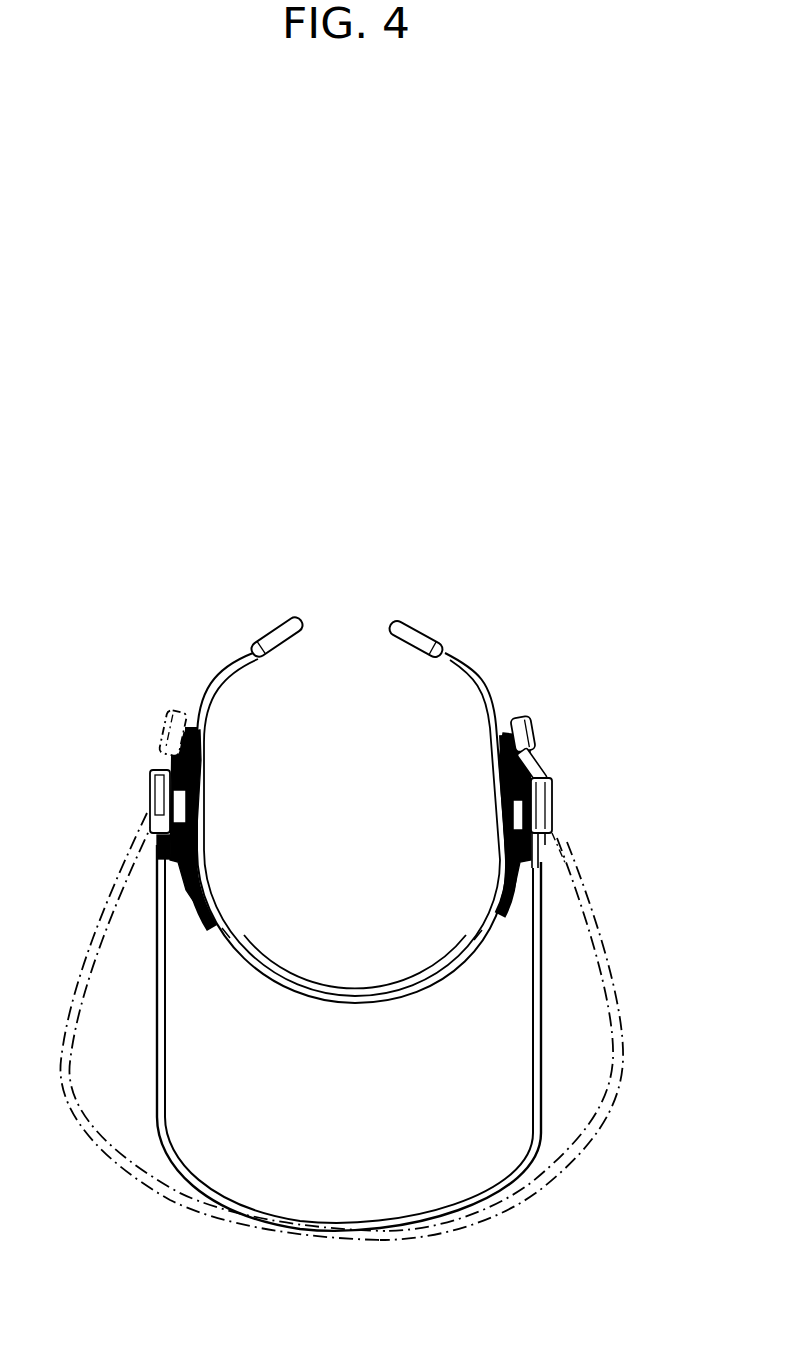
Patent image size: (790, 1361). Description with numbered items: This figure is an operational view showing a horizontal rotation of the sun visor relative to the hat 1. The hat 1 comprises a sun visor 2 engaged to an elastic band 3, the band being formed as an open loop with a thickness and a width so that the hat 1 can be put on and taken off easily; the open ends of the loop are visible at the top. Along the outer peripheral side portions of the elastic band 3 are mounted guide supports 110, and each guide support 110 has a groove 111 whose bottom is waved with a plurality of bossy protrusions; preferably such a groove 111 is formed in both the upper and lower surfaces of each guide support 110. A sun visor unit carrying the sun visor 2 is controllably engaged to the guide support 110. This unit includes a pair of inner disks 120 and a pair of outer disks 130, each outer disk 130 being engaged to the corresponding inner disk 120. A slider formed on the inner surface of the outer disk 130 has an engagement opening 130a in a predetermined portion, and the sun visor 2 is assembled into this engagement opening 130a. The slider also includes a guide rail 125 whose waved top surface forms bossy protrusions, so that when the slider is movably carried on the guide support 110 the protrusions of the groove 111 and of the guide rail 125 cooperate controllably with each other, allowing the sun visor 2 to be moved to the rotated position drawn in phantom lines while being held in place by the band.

The hat 1 is at (188, 613).
The sun visor 2 is at (472, 1157).
The elastic band 3 is at (446, 655).
The guide support 110 is at (528, 747).
The groove 111 is at (507, 733).
The inner disk 120 is at (520, 848).
The guide rail 125 is at (520, 812).
The outer disk 130 is at (553, 797).
The engagement opening 130a is at (554, 818).